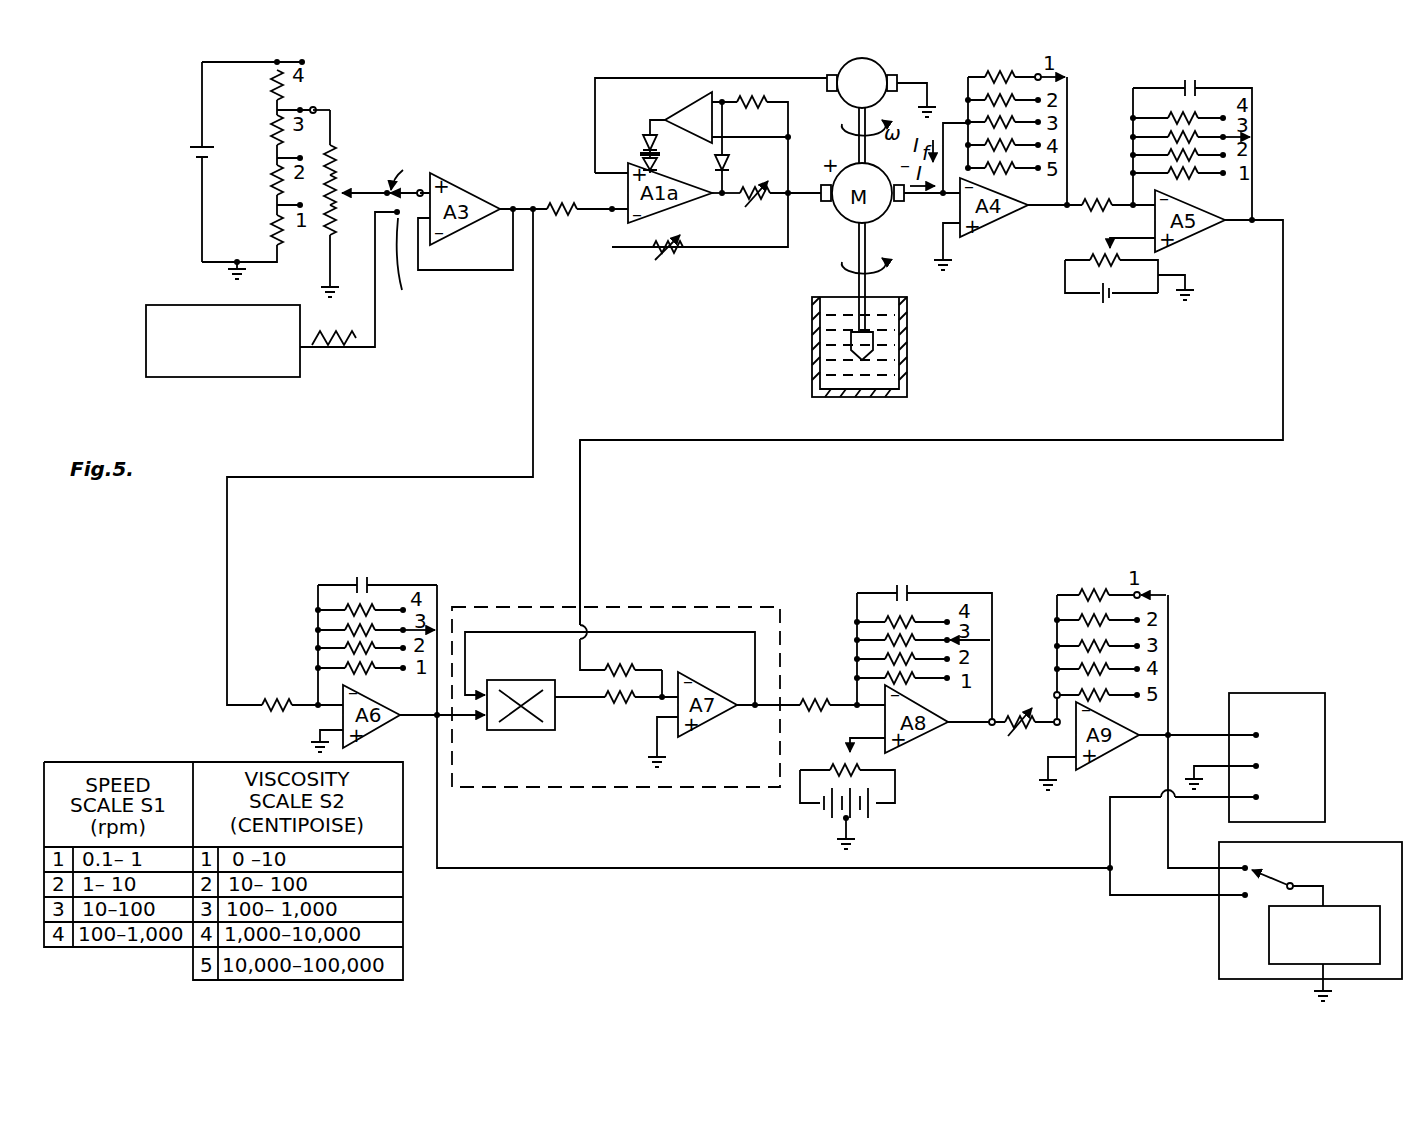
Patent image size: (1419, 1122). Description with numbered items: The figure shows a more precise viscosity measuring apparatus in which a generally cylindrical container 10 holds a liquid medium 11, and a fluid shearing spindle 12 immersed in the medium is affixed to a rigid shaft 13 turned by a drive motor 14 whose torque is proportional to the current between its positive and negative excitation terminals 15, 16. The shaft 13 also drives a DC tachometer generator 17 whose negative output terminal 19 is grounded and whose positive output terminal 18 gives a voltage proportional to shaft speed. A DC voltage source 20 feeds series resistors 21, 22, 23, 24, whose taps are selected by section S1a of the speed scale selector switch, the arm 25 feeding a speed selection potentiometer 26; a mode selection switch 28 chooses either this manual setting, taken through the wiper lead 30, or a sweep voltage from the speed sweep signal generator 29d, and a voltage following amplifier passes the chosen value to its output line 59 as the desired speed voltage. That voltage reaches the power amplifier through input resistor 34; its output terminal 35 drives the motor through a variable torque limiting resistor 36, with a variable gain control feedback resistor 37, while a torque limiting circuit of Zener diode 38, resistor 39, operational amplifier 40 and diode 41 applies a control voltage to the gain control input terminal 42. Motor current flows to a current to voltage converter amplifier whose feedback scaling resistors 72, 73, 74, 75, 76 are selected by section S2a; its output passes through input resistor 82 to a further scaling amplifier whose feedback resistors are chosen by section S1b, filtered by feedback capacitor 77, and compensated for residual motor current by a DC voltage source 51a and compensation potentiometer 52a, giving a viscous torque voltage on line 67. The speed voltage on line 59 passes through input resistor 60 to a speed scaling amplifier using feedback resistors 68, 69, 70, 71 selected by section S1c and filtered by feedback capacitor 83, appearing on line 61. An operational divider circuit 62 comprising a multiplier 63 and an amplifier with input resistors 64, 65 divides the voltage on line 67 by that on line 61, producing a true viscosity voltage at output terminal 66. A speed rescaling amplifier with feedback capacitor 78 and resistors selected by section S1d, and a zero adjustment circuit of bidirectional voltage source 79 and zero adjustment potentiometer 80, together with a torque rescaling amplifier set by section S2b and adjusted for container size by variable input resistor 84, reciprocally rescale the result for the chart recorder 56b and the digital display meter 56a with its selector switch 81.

The container 10 is at (907, 384).
The liquid medium 11 is at (840, 364).
The fluid shearing spindle 12 is at (850, 348).
The shaft 13 is at (864, 126).
The drive motor 14 is at (872, 230).
The positive excitation terminal 15 is at (822, 214).
The negative excitation terminal 16 is at (900, 214).
The DC tachometer generator 17 is at (846, 104).
The positive output terminal 18 is at (832, 90).
The negative output terminal 19 is at (898, 80).
The DC voltage source 20 is at (186, 148).
The resistor 21 is at (270, 92).
The resistor 22 is at (270, 134).
The resistor 23 is at (270, 192).
The resistor 24 is at (270, 232).
The arm of selector switch S1 25 is at (326, 108).
The speed selection potentiometer 26 is at (334, 170).
The mode selection switch 28 is at (427, 189).
The speed sweep signal generator 29d is at (225, 378).
The potentiometer wiper lead 30 is at (356, 198).
The input resistor 34 is at (568, 205).
The output terminal 35 is at (710, 196).
The variable torque limiting resistor 36 is at (756, 198).
The variable gain control feedback resistor 37 is at (674, 252).
The Zener diode 38 is at (729, 161).
The resistor 39 is at (750, 97).
The operational amplifier 40 is at (676, 109).
The diode 41 is at (644, 139).
The gain control input terminal 42 is at (658, 156).
The DC voltage source 51a is at (1112, 302).
The compensation potentiometer 52a is at (1096, 256).
The digital display meter 56a is at (1338, 842).
The chart recorder 56b is at (1246, 692).
The output line of amplifier A3 59 is at (516, 205).
The input resistor 60 is at (272, 712).
The output line of amplifier A6 61 is at (424, 716).
The operational divider circuit 62 is at (660, 608).
The multiplier 63 is at (530, 732).
The input resistor 64 is at (630, 666).
The input resistor 65 is at (618, 702).
The output terminal of amplifier A7 66 is at (746, 712).
The line 67 is at (580, 566).
The feedback resistor 68 is at (344, 668).
The feedback resistor 69 is at (344, 648).
The feedback resistor 70 is at (344, 630).
The feedback resistor 71 is at (344, 612).
The scaling resistor 72 is at (1010, 172).
The scaling resistor 73 is at (1016, 140).
The scaling resistor 74 is at (974, 122).
The scaling resistor 75 is at (990, 78).
The feedback resistor 76 is at (994, 78).
The feedback capacitor 77 is at (1198, 84).
The feedback capacitor 78 is at (910, 586).
The bidirectional voltage source 79 is at (826, 818).
The zero adjustment potentiometer 80 is at (831, 770).
The selector switch 81 is at (1280, 880).
The input resistor 82 is at (1098, 200).
The feedback capacitor 83 is at (370, 580).
The variable input resistor 84 is at (1042, 728).
The section S1a of speed scale selector switch S1a is at (304, 106).
The section S1b of speed scale selector switch S1b is at (1254, 140).
The section S1c of speed scale selector switch S1c is at (438, 628).
The section S1d of speed scale selector switch S1d is at (986, 644).
The section S2a of viscosity scale selector switch S2a is at (1070, 80).
The section S2b of viscosity scale selector switch S2b is at (1138, 590).